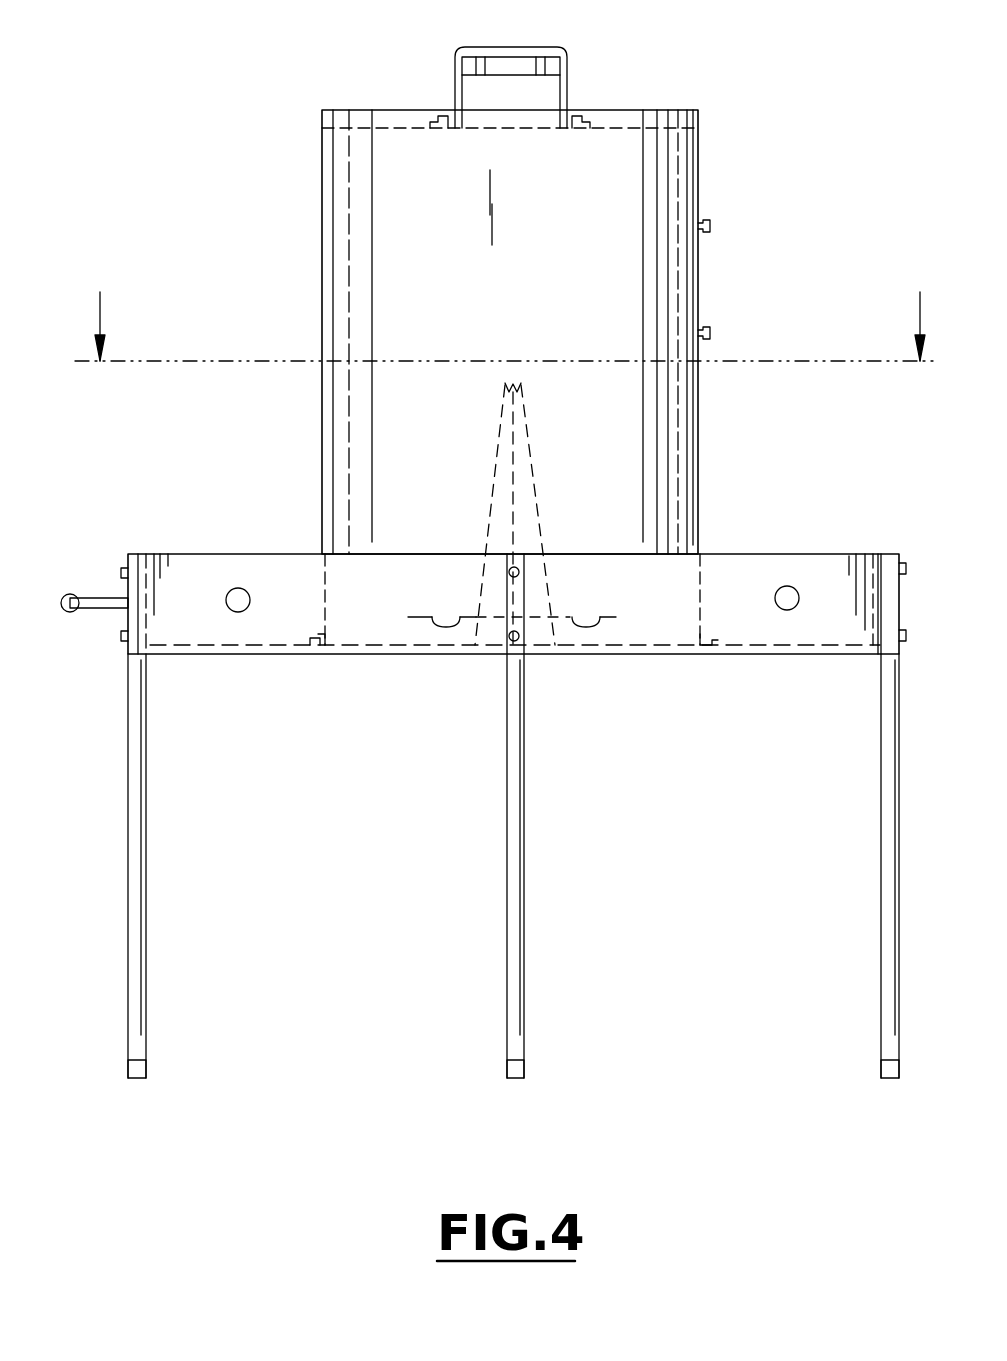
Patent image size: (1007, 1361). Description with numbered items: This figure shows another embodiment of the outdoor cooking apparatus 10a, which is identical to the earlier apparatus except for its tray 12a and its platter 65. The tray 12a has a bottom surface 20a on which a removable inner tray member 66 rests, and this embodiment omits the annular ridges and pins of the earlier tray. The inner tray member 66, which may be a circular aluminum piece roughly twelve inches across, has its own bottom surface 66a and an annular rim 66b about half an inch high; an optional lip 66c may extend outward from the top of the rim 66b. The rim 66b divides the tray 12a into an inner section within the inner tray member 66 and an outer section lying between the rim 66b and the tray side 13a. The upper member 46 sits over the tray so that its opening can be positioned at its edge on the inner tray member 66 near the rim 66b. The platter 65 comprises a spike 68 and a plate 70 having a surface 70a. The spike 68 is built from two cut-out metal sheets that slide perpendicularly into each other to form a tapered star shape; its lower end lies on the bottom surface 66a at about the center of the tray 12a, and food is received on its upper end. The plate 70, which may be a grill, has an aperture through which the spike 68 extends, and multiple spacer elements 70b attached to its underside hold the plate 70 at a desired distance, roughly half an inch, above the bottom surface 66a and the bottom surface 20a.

The apparatus 10a is at (540, 29).
The upper member 46 is at (322, 252).
The spike 68 is at (535, 485).
The tray 12a is at (247, 553).
The tray side 13a is at (147, 587).
The bottom surface 20a is at (240, 645).
The inner tray member 66 is at (684, 643).
The bottom surface 66a is at (395, 645).
The rim 66b is at (333, 643).
The lip 66c is at (316, 640).
The plate 70 is at (410, 617).
The surface 70a is at (470, 617).
The spacer elements 70b is at (592, 620).
The platter 65 is at (612, 590).